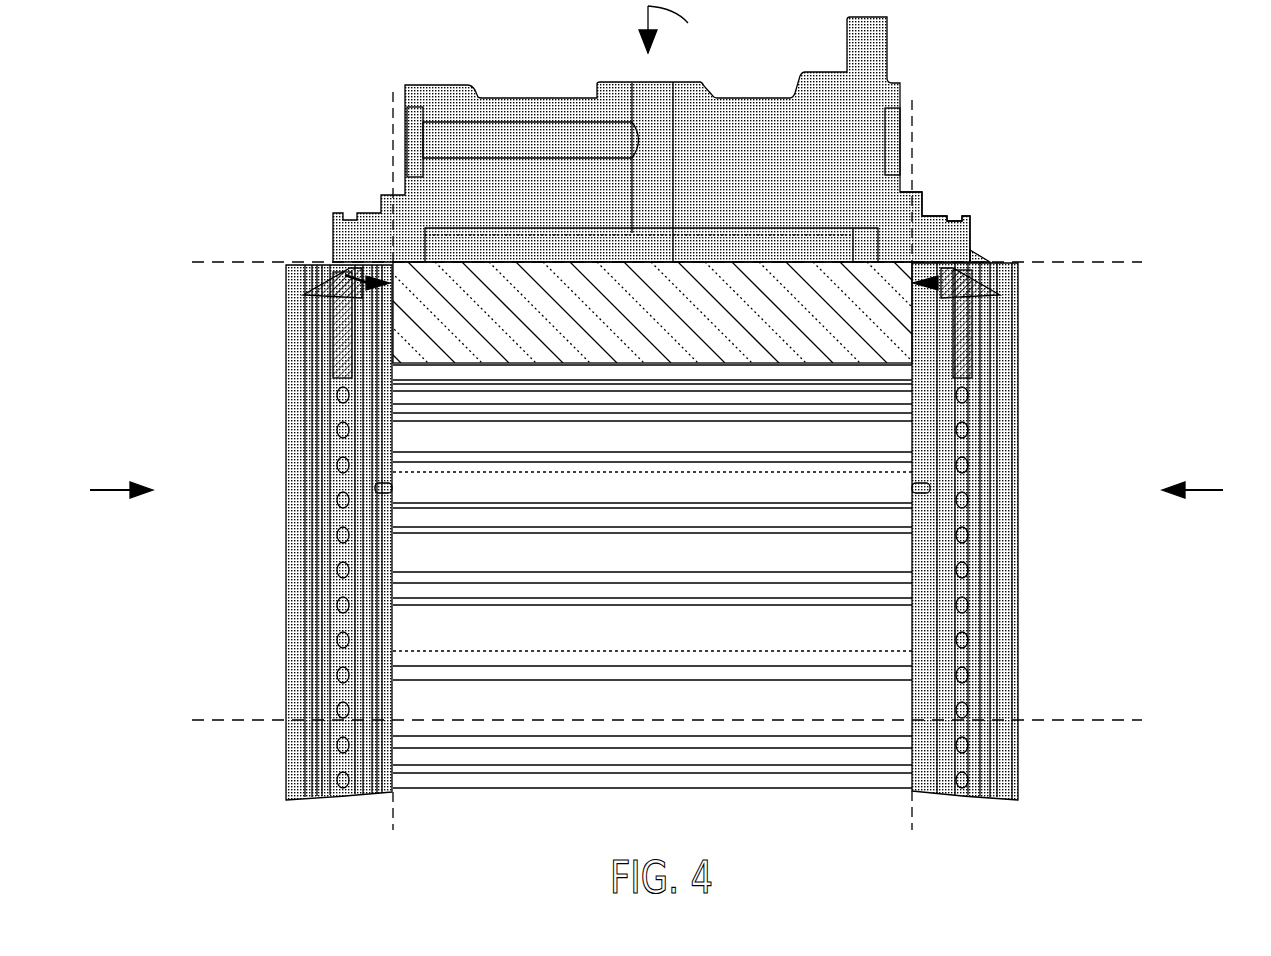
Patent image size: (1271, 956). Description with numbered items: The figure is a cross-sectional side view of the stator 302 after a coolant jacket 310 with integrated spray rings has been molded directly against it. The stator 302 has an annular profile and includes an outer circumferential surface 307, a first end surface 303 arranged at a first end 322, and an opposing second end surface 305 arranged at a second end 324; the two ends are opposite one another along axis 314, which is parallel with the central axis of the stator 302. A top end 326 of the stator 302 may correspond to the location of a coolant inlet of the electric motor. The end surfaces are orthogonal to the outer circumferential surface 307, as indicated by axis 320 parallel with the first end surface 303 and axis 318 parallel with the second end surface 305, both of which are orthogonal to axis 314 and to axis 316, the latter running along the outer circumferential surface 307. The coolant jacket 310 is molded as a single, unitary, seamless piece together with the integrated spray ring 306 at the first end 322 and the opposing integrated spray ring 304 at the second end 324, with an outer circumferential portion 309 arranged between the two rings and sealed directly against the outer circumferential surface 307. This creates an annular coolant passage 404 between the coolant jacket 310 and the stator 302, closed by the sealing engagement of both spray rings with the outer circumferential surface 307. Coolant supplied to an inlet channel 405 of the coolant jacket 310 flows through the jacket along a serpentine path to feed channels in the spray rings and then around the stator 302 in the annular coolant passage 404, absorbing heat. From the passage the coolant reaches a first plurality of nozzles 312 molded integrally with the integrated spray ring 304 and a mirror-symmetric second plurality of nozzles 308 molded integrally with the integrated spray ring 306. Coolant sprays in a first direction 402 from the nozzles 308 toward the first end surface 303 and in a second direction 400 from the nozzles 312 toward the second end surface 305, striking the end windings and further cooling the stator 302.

The stator 302 is at (402, 267).
The first end surface 303 is at (913, 313).
The integrated spray ring 304 is at (362, 458).
The second end surface 305 is at (392, 315).
The integrated spray ring 306 is at (1000, 460).
The outer circumferential surface 307 is at (652, 260).
The second plurality of nozzles 308 is at (963, 370).
The outer circumferential portion 309 is at (722, 98).
The coolant jacket 310 is at (938, 217).
The first plurality of nozzles 312 is at (340, 355).
The axis 314 is at (1058, 720).
The axis 316 is at (1080, 262).
The axis 318 is at (393, 177).
The axis 320 is at (912, 170).
The first end 322 is at (1210, 490).
The second end 324 is at (112, 490).
The top end 326 is at (672, 29).
The second direction 400 is at (345, 276).
The first direction 402 is at (937, 283).
The annular coolant passage 404 is at (556, 247).
The inlet channel 405 is at (642, 80).